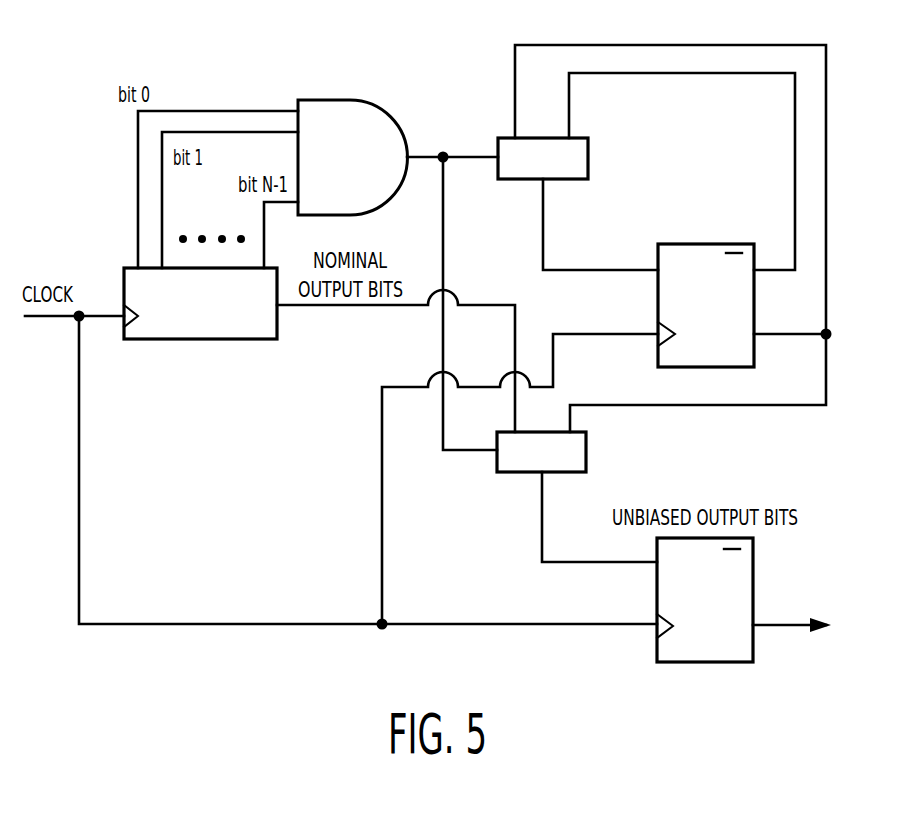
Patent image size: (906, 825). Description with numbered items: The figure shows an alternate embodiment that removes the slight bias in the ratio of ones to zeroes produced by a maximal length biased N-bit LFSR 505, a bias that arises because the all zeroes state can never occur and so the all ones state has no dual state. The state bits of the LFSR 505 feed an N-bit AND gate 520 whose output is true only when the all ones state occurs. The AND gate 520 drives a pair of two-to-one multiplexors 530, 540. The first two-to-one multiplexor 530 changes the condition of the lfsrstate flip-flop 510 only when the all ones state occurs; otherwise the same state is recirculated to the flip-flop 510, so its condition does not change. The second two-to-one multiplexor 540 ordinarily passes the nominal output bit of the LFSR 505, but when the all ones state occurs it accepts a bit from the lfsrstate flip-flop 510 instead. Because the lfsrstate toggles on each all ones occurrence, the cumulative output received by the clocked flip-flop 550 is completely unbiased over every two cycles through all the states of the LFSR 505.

The LFSR 505 is at (185, 340).
The lfsrstate flip-flop 510 is at (712, 244).
The N-bit AND gate 520 is at (368, 100).
The first 2-to-1 multiplexor 530 is at (588, 147).
The second 2-to-1 multiplexor 540 is at (498, 472).
The flip-flop 550 is at (753, 590).